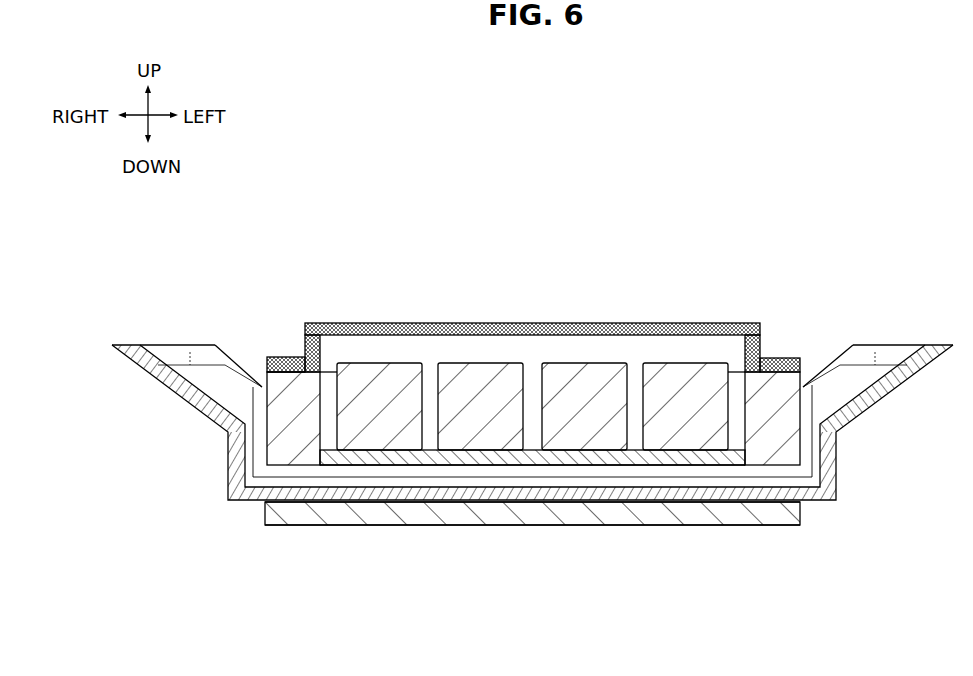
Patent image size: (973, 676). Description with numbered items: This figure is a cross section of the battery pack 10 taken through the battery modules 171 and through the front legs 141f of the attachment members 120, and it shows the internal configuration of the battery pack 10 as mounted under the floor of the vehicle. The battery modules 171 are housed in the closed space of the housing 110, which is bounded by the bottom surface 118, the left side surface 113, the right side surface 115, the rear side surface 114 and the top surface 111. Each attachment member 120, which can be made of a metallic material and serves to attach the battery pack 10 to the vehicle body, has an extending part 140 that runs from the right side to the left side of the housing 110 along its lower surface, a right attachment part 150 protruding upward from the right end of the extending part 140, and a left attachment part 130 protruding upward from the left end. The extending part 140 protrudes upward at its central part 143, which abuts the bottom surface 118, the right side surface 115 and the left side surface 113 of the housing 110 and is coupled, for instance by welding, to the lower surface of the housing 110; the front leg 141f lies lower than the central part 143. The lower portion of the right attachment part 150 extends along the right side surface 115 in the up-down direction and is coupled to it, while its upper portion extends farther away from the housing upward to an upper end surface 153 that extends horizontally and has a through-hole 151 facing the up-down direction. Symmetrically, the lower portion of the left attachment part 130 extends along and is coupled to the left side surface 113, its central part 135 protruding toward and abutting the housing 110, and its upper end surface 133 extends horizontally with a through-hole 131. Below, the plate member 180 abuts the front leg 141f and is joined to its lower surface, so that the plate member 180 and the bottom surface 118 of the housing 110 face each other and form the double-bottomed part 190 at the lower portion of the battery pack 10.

The battery pack 10 is at (822, 101).
The housing 110 is at (557, 354).
The top surface 111 is at (462, 322).
The left side surface 113 is at (791, 374).
The rear side surface 114 is at (530, 378).
The right side surface 115 is at (283, 390).
The wiring layer 118 is at (702, 462).
The attachment member 120 is at (200, 450).
The left attachment part 130 is at (882, 358).
The through-hole 131 is at (900, 344).
The upper end surface 133 is at (860, 344).
The central part 135 is at (805, 388).
The extending part 140 is at (533, 504).
The front leg 141f is at (423, 503).
The central part 143 is at (477, 473).
The right attachment part 150 is at (187, 359).
The through-hole 151 is at (172, 344).
The upper end surface 153 is at (203, 342).
The battery module 171 is at (392, 392).
The plate member 180 is at (645, 503).
The double-bottomed part 190 is at (713, 563).